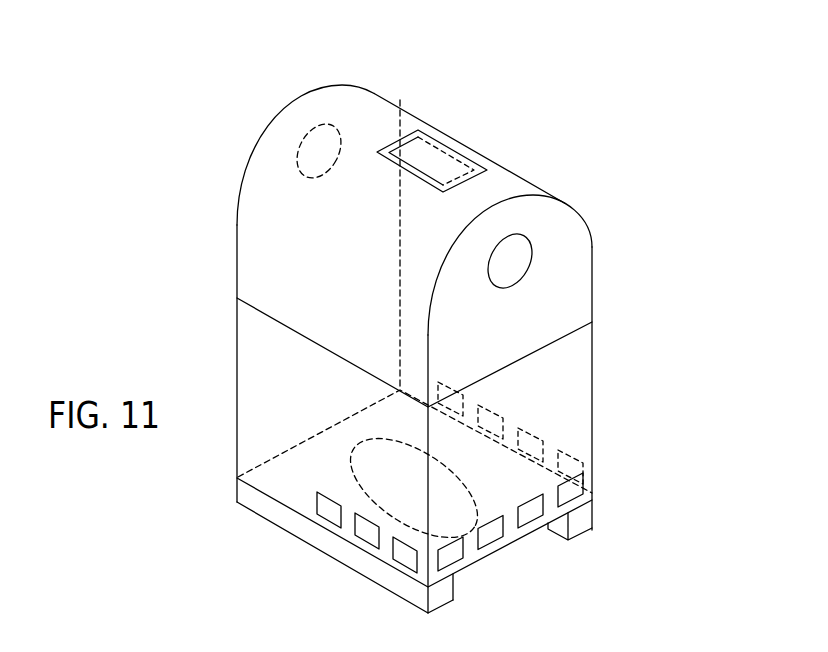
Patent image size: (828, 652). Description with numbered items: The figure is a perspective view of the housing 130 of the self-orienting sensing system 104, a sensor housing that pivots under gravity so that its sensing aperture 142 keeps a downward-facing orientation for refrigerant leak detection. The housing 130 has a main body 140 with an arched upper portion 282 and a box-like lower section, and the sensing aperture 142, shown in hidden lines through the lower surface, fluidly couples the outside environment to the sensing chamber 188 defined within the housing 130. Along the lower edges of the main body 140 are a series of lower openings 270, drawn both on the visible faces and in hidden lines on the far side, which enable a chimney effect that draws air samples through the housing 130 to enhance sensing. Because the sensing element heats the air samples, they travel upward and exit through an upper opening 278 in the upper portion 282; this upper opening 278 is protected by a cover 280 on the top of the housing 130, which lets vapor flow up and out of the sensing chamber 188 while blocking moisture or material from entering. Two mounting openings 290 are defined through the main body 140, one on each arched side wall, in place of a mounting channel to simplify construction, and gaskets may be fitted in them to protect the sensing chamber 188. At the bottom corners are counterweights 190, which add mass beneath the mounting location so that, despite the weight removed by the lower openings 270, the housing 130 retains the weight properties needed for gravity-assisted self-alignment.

The self-orienting sensing system 104 is at (358, 46).
The housing 130 is at (312, 80).
The main body 140 is at (236, 250).
The sensing aperture 142 is at (377, 437).
The sensing chamber 188 is at (548, 387).
The counterweights 190 is at (580, 537).
The lower openings 270 is at (576, 447).
The upper opening 278 is at (423, 190).
The cover 280 is at (487, 170).
The upper portion 282 is at (371, 122).
The mounting openings 290 is at (528, 233).